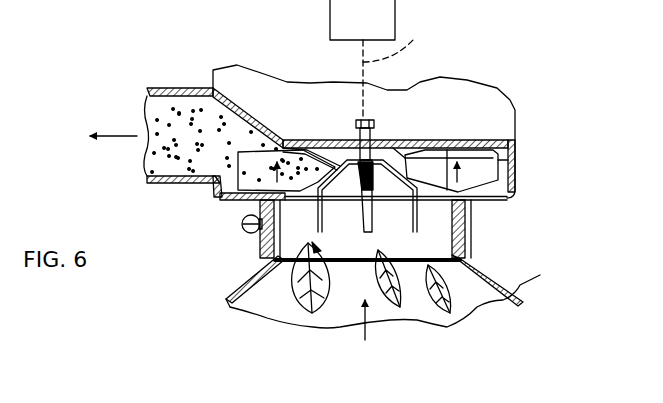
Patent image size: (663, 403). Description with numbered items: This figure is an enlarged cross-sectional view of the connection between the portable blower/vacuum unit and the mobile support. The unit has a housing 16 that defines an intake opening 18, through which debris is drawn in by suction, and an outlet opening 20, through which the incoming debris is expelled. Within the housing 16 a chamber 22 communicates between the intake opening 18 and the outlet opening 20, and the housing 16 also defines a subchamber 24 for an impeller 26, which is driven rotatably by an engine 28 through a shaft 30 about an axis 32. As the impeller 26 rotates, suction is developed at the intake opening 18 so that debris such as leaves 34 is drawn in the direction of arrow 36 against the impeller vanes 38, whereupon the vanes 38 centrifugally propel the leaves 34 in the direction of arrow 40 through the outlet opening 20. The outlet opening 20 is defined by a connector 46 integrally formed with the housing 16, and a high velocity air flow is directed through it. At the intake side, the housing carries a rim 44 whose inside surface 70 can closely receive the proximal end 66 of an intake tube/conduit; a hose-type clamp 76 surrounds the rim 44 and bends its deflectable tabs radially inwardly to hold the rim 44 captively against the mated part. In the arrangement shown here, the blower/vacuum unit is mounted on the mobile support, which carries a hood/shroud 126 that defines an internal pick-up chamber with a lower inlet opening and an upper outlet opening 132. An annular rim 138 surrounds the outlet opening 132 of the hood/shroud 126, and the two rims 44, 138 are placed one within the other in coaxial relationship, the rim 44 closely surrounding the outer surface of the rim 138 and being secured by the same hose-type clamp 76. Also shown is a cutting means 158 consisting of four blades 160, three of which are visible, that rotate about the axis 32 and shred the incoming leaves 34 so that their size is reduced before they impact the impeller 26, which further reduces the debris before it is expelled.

The housing 16 is at (259, 110).
The intake opening 18 is at (340, 263).
The outlet opening 20 is at (147, 107).
The chamber 22 is at (220, 157).
The subchamber 24 is at (500, 155).
The impeller 26 is at (450, 163).
The engine 28 is at (373, 25).
The shaft 30 is at (376, 128).
The axis 32 is at (402, 37).
The leaves 34 is at (312, 313).
The arrow 36 is at (365, 340).
The impeller vanes 38 is at (470, 163).
The arrow 40 is at (115, 140).
The rim 44 is at (440, 211).
The connector 46 is at (190, 87).
The proximal end 66 is at (447, 233).
The inside surface 70 is at (275, 258).
The hose-type clamp 76 is at (242, 223).
The hood/shroud 126 is at (503, 290).
The upper outlet opening 132 is at (473, 230).
The annular rim 138 is at (273, 256).
The cutting means 158 is at (367, 196).
The blades 160 is at (300, 252).